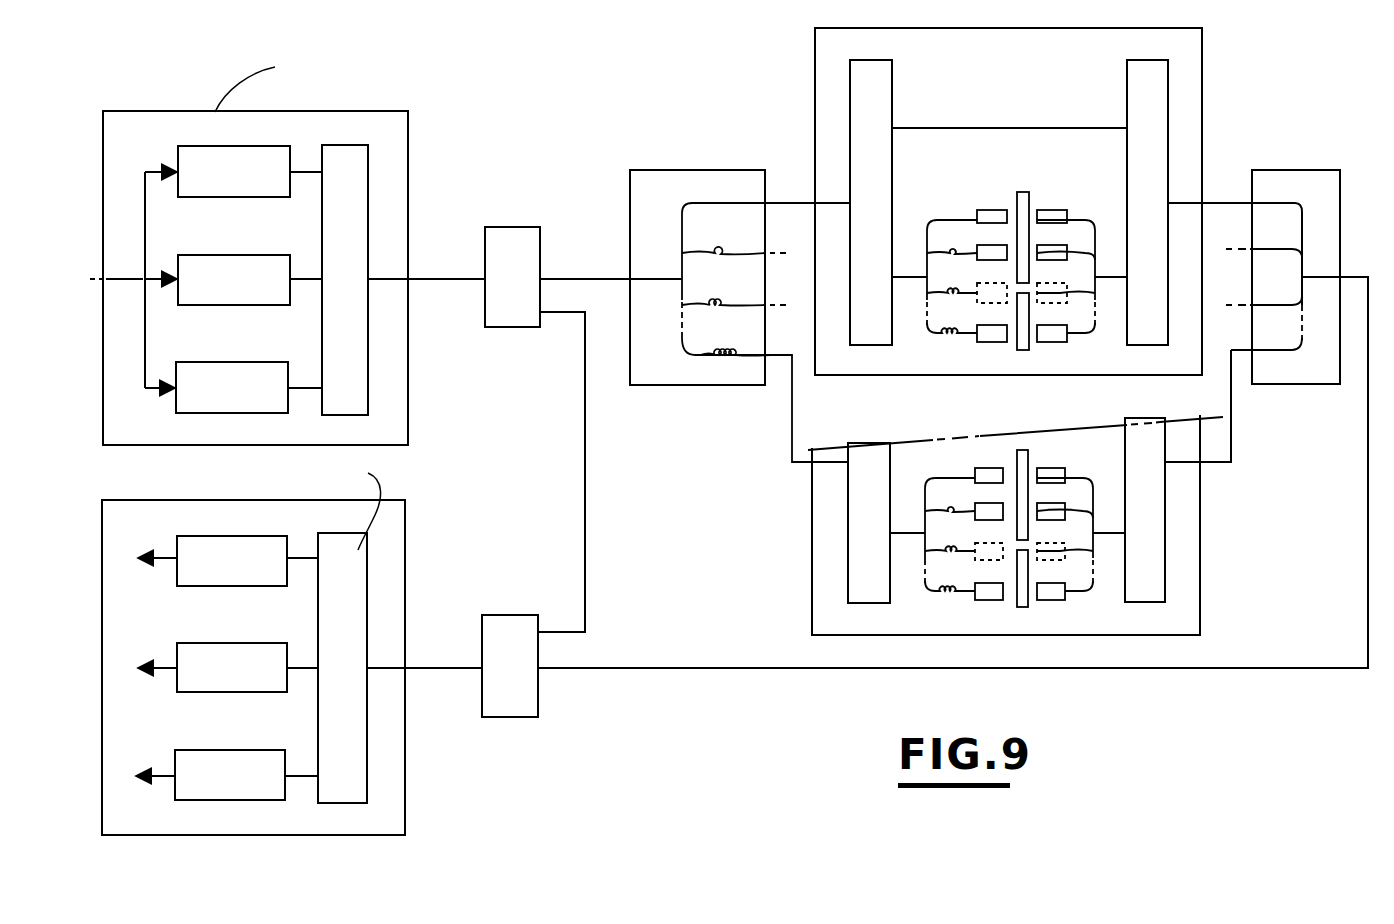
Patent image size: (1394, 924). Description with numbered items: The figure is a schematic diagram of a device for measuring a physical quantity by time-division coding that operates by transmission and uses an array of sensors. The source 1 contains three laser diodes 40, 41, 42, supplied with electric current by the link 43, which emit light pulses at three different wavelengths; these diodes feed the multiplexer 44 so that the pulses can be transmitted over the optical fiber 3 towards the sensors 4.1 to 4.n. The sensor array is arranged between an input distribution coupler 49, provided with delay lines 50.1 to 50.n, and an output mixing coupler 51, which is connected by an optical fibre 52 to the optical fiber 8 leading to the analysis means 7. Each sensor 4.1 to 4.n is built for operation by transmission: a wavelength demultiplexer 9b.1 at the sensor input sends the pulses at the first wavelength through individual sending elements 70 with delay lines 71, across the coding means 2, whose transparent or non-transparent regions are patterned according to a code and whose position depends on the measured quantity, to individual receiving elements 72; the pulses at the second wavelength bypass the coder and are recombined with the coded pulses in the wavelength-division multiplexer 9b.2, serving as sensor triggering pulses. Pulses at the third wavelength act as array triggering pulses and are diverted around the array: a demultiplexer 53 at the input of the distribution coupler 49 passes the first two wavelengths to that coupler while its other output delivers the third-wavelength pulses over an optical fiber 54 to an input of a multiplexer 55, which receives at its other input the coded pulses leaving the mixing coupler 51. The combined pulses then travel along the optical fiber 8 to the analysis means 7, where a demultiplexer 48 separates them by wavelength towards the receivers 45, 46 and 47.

The source 1 is at (410, 147).
The coding means 2 is at (1023, 192).
The means of transmission 3 is at (443, 283).
The sensor 4.1 is at (812, 78).
The sensor 4.n is at (810, 542).
The analysis means 7 is at (406, 532).
The link 8 is at (446, 683).
The wavelength demultiplexer 9b.1 is at (884, 96).
The wavelength-division multiplexer 9b.2 is at (1136, 74).
The laser diode 40 is at (226, 182).
The laser diode 41 is at (220, 294).
The laser diode 42 is at (220, 402).
The link 43 is at (131, 286).
The multiplexer 44 is at (328, 225).
The receiver 45 is at (226, 580).
The receiver 46 is at (226, 686).
The receiver 47 is at (224, 793).
The demultiplexer 48 is at (322, 606).
The input distribution coupler 49 is at (659, 170).
The delay line 50.1 is at (734, 203).
The delay line 50.n is at (724, 362).
The output mixing coupler 51 is at (1374, 96).
The optical fibre 52 is at (803, 672).
The demultiplexer 53 is at (507, 233).
The optical fiber 54 is at (586, 500).
The multiplexer 55 is at (506, 622).
The sending element 70 is at (988, 210).
The delay line 71 is at (953, 220).
The receiving element 72 is at (1052, 210).